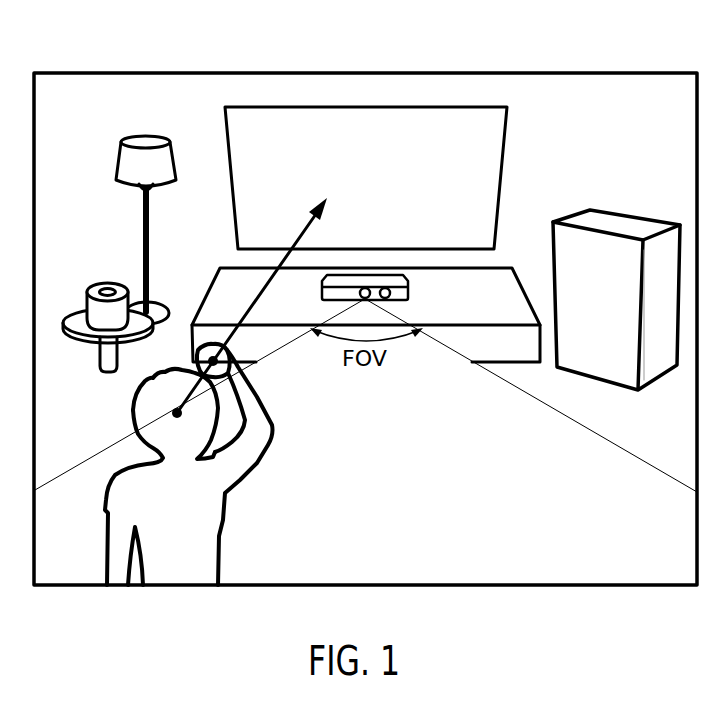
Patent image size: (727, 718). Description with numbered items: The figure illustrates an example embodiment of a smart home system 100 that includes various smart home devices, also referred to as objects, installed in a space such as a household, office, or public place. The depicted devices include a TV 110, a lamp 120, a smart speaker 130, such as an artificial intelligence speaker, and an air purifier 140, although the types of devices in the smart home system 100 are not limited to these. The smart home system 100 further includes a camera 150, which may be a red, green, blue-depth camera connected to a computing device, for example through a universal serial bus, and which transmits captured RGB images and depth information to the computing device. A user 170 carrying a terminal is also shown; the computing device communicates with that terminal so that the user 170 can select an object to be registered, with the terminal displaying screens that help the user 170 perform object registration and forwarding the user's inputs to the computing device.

The smart home system 100 is at (365, 72).
The TV 110 is at (504, 143).
The lamp 120 is at (145, 142).
The smart speaker 130 is at (105, 285).
The air purifier 140 is at (625, 222).
The camera 150 is at (410, 293).
The user 170 is at (140, 411).